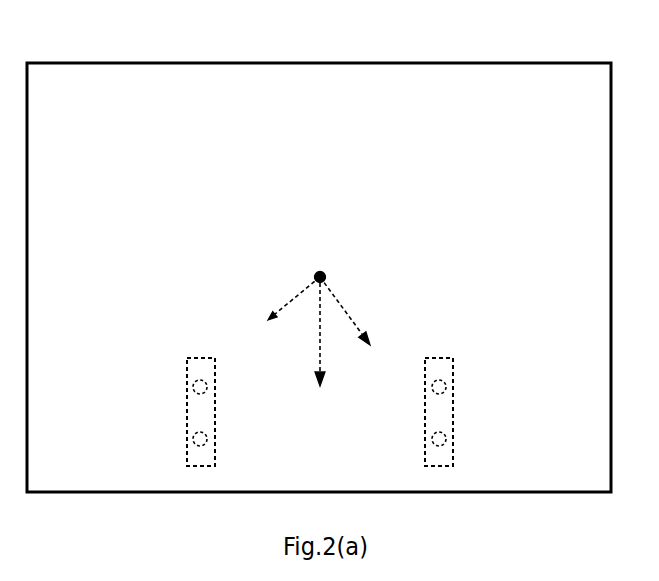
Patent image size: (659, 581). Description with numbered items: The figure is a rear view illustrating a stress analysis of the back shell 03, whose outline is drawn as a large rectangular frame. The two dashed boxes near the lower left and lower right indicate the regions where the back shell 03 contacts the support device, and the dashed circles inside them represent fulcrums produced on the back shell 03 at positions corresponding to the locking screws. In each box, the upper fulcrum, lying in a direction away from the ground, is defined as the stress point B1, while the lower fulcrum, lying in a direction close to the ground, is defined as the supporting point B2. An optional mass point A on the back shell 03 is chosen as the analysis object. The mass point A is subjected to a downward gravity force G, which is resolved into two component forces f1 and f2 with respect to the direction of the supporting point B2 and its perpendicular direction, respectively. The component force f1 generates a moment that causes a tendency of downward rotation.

The back shell 03 is at (272, 42).
The mass point A is at (320, 264).
The gravity force G is at (320, 347).
The component force f1 is at (294, 298).
The component force f2 is at (345, 311).
The stress point B1 is at (520, 387).
The supporting point B2 is at (520, 439).